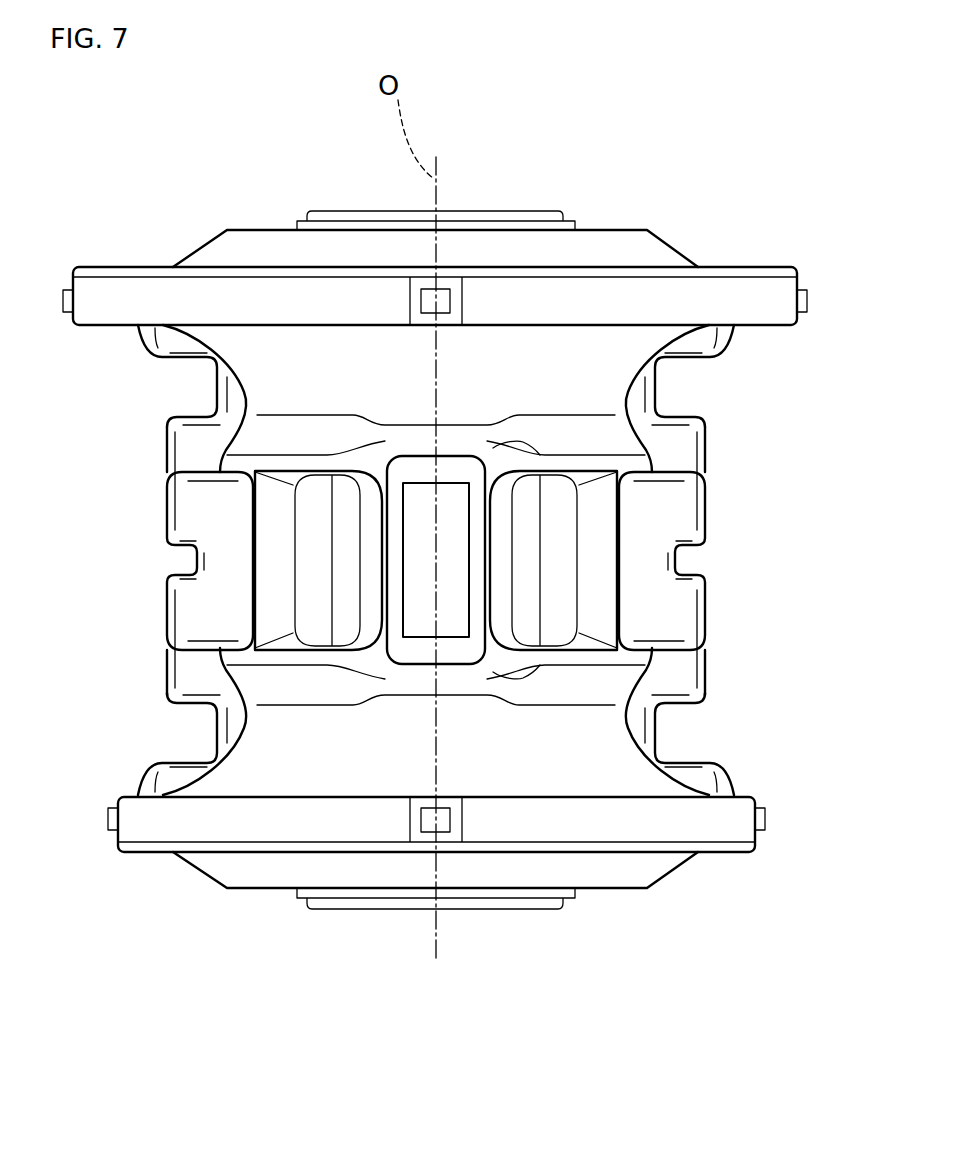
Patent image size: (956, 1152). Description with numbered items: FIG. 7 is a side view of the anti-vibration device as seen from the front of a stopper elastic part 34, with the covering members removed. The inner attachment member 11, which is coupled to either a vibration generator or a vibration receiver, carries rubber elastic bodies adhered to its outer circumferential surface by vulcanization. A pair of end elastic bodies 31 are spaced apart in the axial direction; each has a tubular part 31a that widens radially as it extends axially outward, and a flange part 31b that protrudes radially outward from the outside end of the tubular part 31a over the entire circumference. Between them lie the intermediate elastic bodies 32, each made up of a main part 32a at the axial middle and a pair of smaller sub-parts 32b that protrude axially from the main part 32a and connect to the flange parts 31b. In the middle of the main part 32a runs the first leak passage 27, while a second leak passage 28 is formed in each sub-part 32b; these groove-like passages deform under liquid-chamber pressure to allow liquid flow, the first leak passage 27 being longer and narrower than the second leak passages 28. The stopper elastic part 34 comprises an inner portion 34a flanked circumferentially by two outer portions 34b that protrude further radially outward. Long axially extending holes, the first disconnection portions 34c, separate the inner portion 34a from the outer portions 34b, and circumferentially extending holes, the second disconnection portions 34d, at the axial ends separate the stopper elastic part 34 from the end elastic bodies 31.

The inner attachment member 11 is at (545, 210).
The first leak passage 27 is at (193, 557).
The second leak passage 28 is at (220, 382).
The end elastic body 31 is at (800, 262).
The tubular part 31a is at (240, 385).
The flange part 31b is at (80, 283).
The intermediate elastic body 32 is at (720, 498).
The main part 32a is at (167, 518).
The sub-part 32b is at (165, 458).
The stopper elastic part 34 is at (348, 660).
The inner portion 34a is at (493, 648).
The outer portion 34b is at (520, 472).
The first disconnection portion 34c is at (393, 572).
The second disconnection portion 34d is at (456, 462).